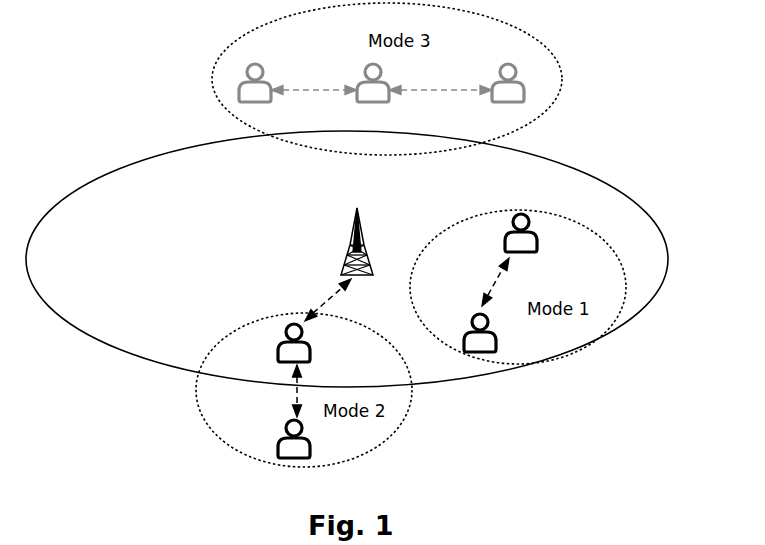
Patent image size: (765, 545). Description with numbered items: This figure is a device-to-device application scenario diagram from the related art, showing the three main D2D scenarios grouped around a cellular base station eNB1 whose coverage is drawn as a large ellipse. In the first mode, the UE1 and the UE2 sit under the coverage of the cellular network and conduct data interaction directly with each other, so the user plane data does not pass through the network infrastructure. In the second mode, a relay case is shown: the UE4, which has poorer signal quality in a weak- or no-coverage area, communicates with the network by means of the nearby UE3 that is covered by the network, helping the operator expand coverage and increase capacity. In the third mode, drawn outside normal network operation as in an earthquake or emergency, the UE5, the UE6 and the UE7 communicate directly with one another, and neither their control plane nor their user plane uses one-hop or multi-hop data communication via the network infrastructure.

The base station (eNB) eNB1 is at (378, 241).
The element UE1 is at (496, 334).
The element UE2 is at (538, 233).
The element UE3 is at (310, 343).
The element UE4 is at (310, 439).
The element UE5 is at (255, 95).
The element UE6 is at (373, 95).
The element UE7 is at (508, 95).